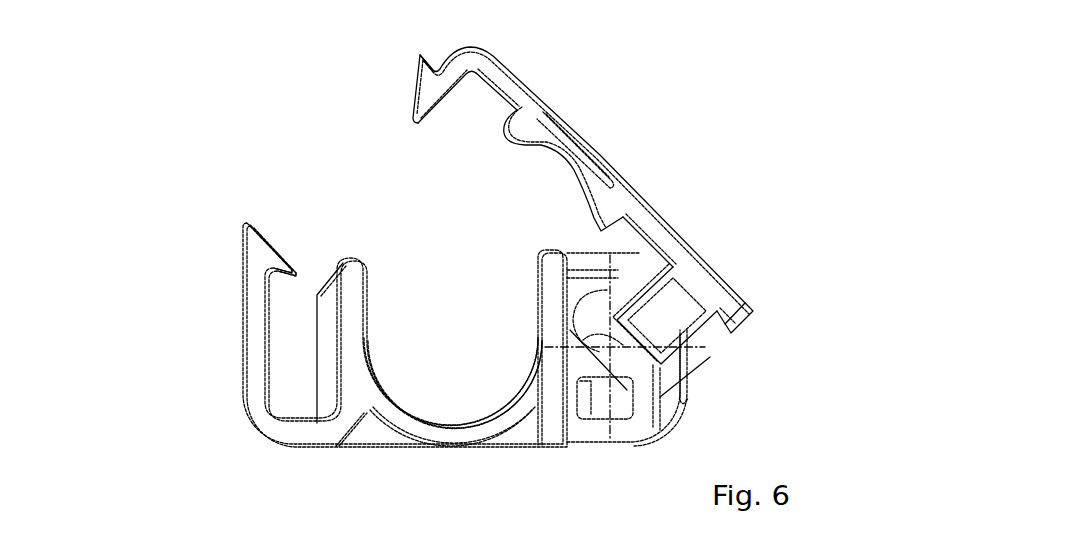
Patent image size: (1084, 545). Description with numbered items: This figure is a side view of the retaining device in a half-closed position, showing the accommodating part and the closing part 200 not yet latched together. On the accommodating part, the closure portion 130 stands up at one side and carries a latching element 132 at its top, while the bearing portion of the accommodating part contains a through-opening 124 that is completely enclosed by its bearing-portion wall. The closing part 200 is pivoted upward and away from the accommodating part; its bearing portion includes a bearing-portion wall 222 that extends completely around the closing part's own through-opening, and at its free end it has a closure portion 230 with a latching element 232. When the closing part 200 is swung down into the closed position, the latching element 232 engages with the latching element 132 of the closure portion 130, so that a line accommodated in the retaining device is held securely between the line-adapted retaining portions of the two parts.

The closure portion 130 is at (231, 314).
The latching element 132 is at (267, 254).
The through-opening 124 is at (588, 375).
The closing part 200 is at (667, 189).
The bearing-portion wall 222 is at (653, 315).
The closure portion 230 is at (394, 98).
The latching element 232 is at (435, 100).